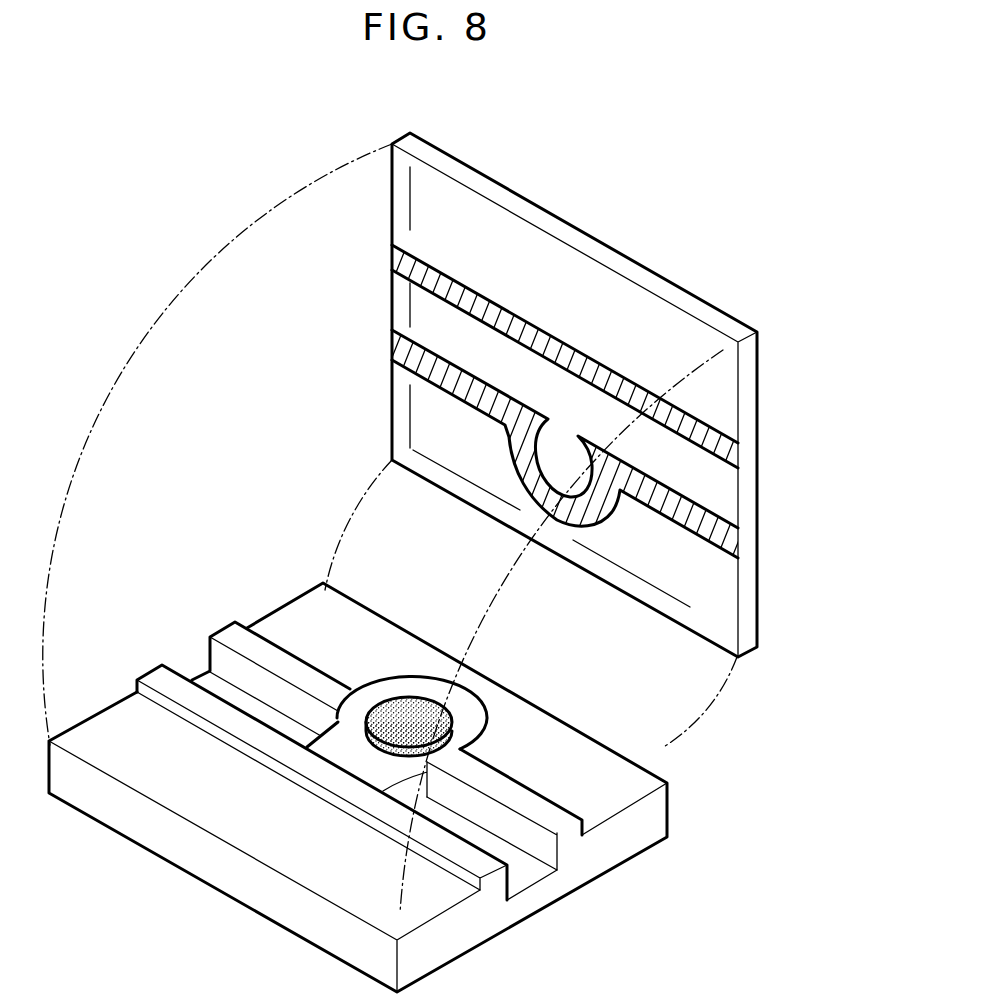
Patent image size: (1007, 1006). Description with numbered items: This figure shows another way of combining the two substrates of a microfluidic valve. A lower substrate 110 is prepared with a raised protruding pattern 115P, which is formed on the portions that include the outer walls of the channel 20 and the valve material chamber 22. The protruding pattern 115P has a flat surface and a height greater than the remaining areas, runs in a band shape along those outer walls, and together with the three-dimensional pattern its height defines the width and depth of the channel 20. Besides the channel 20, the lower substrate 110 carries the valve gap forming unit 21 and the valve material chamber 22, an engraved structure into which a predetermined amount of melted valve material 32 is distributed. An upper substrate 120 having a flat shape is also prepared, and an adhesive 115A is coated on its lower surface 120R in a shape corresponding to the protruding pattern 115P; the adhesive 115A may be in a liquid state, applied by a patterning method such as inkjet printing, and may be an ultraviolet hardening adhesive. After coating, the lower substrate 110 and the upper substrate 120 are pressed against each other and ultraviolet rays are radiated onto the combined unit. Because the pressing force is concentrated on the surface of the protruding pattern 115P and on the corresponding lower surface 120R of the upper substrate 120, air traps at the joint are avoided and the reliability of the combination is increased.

The lower substrate 110 is at (668, 810).
The upper substrate 120 is at (752, 623).
The lower surface of the upper substrate 120R is at (674, 338).
The adhesive 115A is at (402, 260).
The protruding pattern 115P is at (482, 745).
The channel 20 is at (522, 873).
The valve gap forming unit 21 is at (340, 745).
The valve material chamber 22 is at (430, 707).
The valve material 32 is at (403, 712).